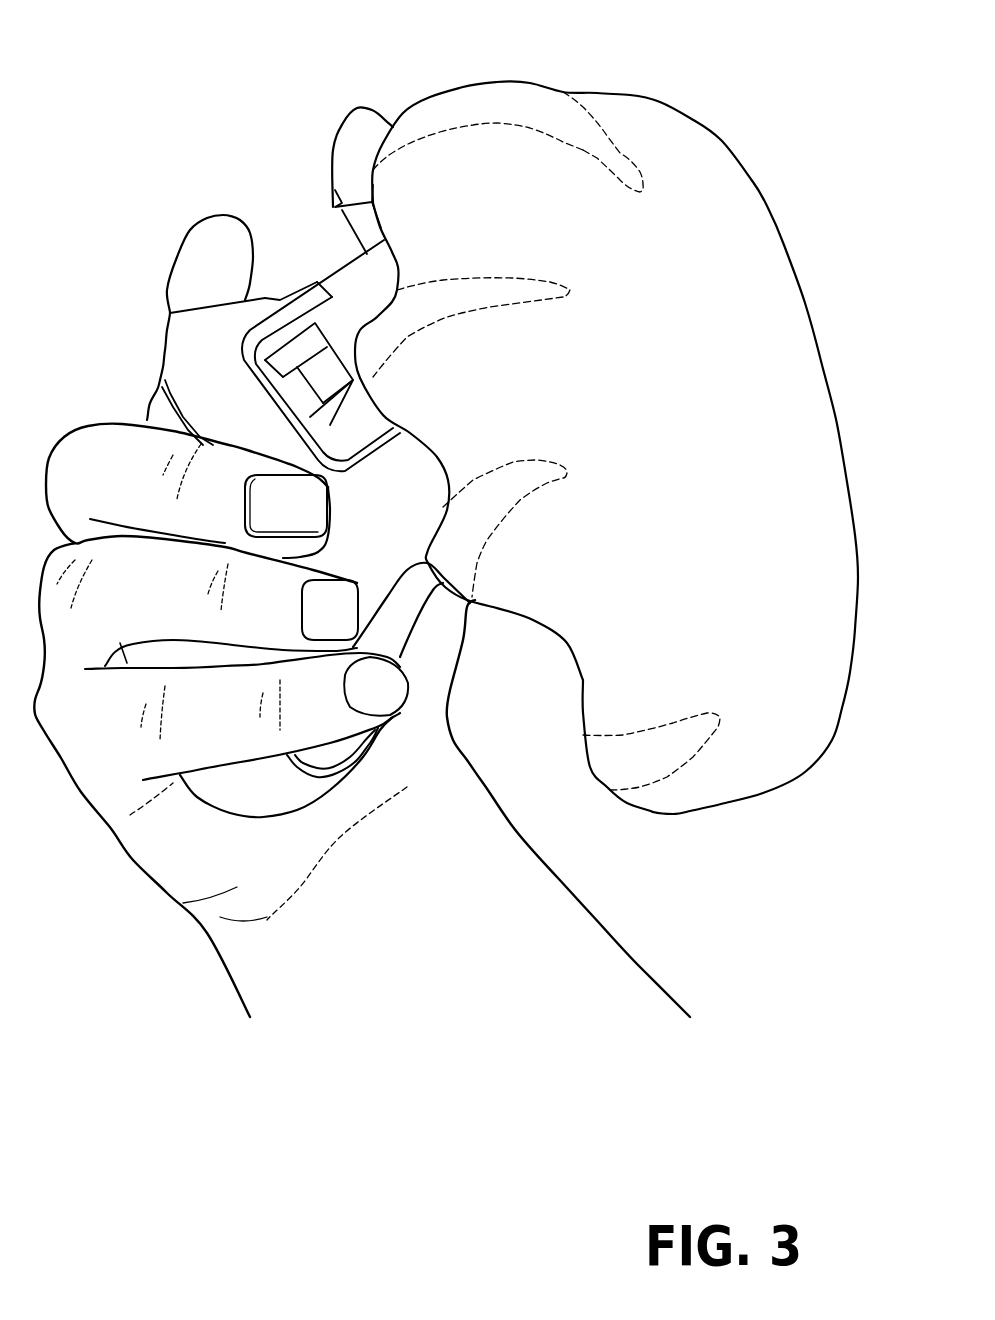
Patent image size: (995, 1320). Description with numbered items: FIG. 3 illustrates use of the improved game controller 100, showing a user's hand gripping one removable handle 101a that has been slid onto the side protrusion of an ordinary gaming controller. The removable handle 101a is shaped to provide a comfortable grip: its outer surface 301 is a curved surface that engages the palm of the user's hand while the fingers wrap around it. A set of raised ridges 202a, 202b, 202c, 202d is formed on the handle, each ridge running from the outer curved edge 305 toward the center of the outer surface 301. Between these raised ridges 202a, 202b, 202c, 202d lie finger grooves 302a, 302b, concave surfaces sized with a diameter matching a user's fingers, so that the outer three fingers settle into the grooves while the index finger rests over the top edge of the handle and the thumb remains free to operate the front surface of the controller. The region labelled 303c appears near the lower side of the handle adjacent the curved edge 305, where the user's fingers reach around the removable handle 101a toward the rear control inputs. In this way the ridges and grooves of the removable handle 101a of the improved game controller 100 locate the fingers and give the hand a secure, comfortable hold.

The improved game controller 100 is at (224, 390).
The removable handle 101a is at (606, 447).
The outer surface 301 is at (606, 426).
The finger groove 302a is at (478, 170).
The finger groove 302b is at (468, 350).
The third side portion of pillow 303c is at (637, 702).
The outer curved edge 305 is at (525, 657).
The raised ridge 202a is at (573, 115).
The raised ridge 202b is at (522, 270).
The raised ridge 202c is at (554, 512).
The raised ridge 202d is at (691, 733).